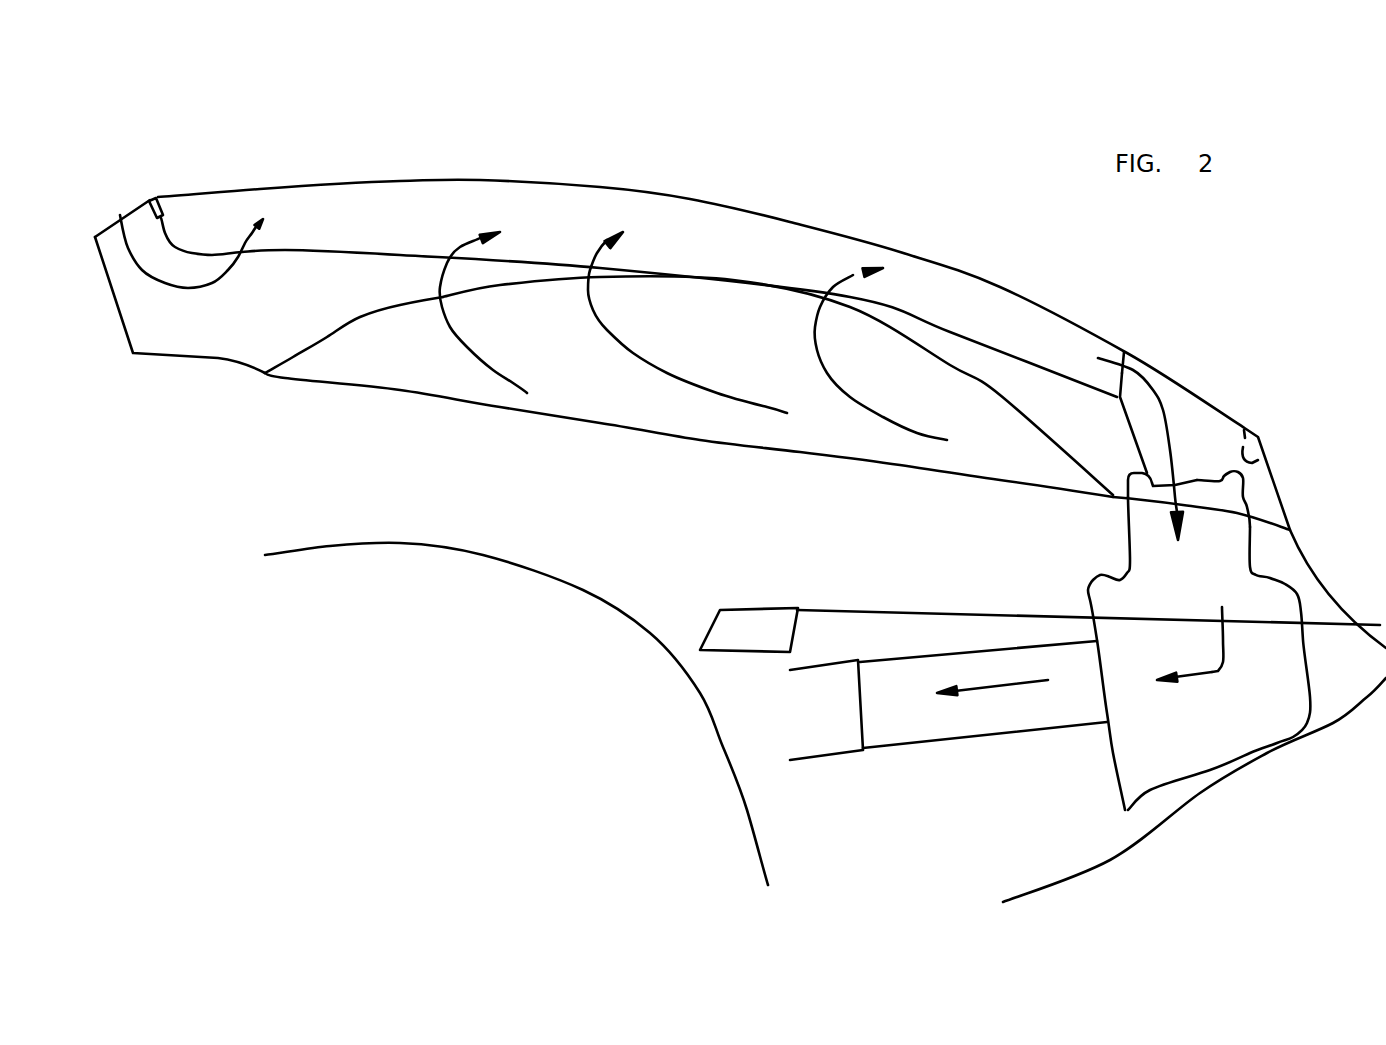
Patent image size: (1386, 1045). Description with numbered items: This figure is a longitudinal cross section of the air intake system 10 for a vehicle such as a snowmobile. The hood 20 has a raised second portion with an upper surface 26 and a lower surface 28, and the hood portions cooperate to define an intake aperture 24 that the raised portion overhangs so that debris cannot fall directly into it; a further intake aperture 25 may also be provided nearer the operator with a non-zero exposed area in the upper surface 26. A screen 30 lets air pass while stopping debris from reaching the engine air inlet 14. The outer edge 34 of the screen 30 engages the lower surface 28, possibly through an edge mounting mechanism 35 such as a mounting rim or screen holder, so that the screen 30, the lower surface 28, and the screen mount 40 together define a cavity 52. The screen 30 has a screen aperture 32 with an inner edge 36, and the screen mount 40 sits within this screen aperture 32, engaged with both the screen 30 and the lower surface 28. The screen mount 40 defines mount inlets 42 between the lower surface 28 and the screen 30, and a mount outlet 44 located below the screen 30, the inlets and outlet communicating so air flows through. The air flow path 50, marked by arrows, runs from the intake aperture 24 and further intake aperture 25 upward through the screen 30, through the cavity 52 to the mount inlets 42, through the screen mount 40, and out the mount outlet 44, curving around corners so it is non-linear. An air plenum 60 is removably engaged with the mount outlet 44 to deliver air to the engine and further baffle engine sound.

The air intake system 10 is at (1007, 241).
The engine air inlet 14 is at (863, 730).
The hood 20 is at (784, 200).
The intake aperture 24 is at (605, 362).
The further intake aperture 25 is at (133, 190).
The upper surface 26 is at (692, 184).
The lower surface 28 is at (536, 206).
The screen 30 is at (355, 283).
The screen aperture 32 is at (1128, 410).
The outer edge 34 is at (169, 188).
The edge mounting mechanism 35 is at (136, 236).
The inner edge 36 is at (1101, 403).
The screen mount 40 is at (1210, 370).
The mount inlet 42 is at (1123, 373).
The mount outlet 44 is at (1205, 470).
The air flow path 50 is at (472, 243).
The cavity 52 is at (363, 212).
The air plenum 60 is at (1238, 590).